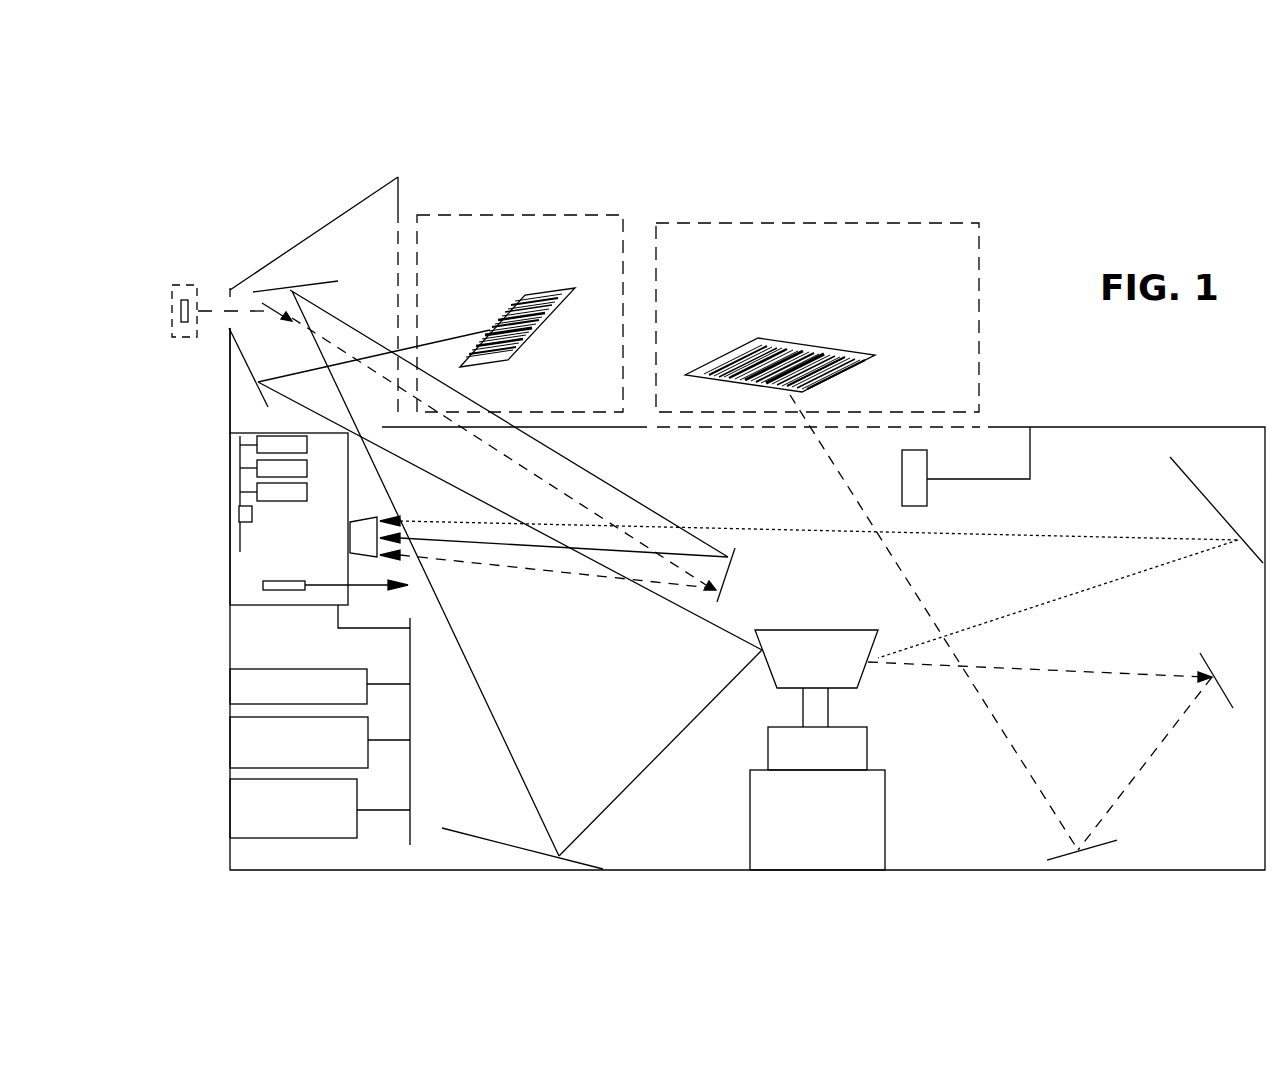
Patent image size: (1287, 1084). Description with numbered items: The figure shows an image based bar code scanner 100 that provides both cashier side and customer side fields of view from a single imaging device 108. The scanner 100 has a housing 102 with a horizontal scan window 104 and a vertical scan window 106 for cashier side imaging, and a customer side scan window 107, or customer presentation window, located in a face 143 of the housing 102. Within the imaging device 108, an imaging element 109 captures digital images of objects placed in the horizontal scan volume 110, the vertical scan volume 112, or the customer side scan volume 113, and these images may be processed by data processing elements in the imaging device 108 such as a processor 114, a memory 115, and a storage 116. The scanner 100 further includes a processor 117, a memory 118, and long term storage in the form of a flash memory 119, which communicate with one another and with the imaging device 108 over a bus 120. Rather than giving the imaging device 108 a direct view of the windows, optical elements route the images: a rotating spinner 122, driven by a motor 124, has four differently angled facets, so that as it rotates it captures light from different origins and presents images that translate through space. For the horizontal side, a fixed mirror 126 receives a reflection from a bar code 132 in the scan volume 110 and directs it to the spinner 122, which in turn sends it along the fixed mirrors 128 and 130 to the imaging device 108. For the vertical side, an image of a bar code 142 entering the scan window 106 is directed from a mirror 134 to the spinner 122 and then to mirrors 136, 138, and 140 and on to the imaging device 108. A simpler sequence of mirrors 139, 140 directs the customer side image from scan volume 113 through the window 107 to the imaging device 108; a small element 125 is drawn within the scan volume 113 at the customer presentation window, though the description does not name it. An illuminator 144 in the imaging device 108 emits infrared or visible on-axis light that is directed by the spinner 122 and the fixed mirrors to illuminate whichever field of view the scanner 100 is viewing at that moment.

The image based bar code scanner 100 is at (213, 173).
The housing 102 is at (362, 198).
The horizontal scan window 104 is at (733, 428).
The vertical scan window 106 is at (396, 280).
The customer side scan window 107 is at (226, 300).
The imaging device 108 is at (305, 607).
The imaging element 109 is at (240, 546).
The horizontal scan volume 110 is at (778, 223).
The vertical scan volume 112 is at (518, 213).
The customer side scan volume 113 is at (188, 285).
The processor 114 is at (242, 443).
The memory 115 is at (242, 470).
The storage 116 is at (242, 495).
The processor 117 is at (305, 668).
The memory 118 is at (370, 755).
The flash memory 119 is at (312, 838).
The bus 120 is at (412, 728).
The rotating spinner 122 is at (822, 630).
The motor 124 is at (799, 767).
The laser diode 125 is at (181, 313).
The fixed mirror 126 is at (1097, 850).
The fixed mirror 128 is at (1223, 697).
The fixed mirror 130 is at (1227, 518).
The bar code 132 is at (810, 345).
The mirror 134 is at (262, 393).
The mirror 136 is at (510, 845).
The mirror 138 is at (322, 284).
The mirror 139 is at (273, 313).
The mirror 140 is at (727, 578).
The bar code 142 is at (532, 338).
The face 143 is at (229, 350).
The illuminator 144 is at (280, 580).